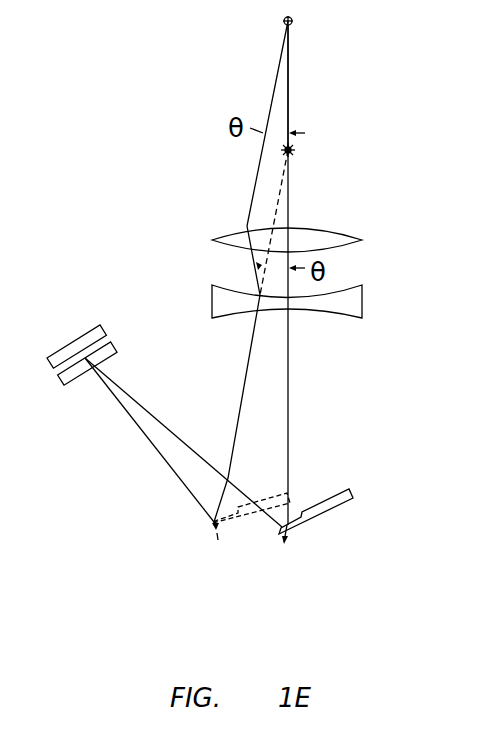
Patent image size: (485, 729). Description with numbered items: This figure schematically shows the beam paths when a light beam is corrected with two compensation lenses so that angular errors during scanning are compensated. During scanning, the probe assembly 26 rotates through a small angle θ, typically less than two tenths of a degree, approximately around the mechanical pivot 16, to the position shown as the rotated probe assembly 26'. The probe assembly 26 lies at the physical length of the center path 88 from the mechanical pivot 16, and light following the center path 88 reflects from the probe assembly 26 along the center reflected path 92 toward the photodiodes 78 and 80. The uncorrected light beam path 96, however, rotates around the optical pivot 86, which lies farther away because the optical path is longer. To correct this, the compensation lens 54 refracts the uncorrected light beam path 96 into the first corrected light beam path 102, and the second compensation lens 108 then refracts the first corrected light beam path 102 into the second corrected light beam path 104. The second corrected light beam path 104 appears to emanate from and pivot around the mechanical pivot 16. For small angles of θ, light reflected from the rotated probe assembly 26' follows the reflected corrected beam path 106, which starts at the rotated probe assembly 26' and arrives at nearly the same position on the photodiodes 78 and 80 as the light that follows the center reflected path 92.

The mechanical pivot 16 is at (296, 150).
The probe assembly 26 is at (354, 520).
The rotated probe assembly 26' is at (276, 549).
The compensation lens 54 is at (340, 240).
The photodiode 78 is at (77, 340).
The photodiode 80 is at (78, 375).
The optical pivot 86 is at (293, 22).
The center path 88 is at (290, 87).
The center reflected path 92 is at (170, 430).
The uncorrected light beam path 96 is at (257, 182).
The first corrected light beam path 102 is at (255, 270).
The second corrected light beam path 104 is at (247, 367).
The reflected corrected beam path 106 is at (160, 453).
The second compensation lens 108 is at (350, 305).